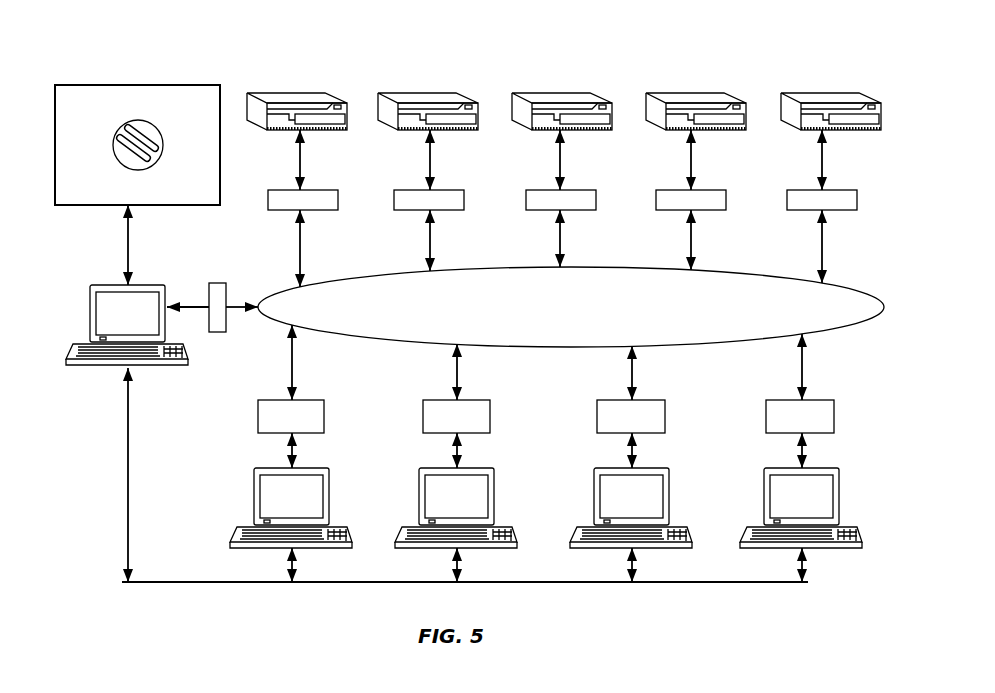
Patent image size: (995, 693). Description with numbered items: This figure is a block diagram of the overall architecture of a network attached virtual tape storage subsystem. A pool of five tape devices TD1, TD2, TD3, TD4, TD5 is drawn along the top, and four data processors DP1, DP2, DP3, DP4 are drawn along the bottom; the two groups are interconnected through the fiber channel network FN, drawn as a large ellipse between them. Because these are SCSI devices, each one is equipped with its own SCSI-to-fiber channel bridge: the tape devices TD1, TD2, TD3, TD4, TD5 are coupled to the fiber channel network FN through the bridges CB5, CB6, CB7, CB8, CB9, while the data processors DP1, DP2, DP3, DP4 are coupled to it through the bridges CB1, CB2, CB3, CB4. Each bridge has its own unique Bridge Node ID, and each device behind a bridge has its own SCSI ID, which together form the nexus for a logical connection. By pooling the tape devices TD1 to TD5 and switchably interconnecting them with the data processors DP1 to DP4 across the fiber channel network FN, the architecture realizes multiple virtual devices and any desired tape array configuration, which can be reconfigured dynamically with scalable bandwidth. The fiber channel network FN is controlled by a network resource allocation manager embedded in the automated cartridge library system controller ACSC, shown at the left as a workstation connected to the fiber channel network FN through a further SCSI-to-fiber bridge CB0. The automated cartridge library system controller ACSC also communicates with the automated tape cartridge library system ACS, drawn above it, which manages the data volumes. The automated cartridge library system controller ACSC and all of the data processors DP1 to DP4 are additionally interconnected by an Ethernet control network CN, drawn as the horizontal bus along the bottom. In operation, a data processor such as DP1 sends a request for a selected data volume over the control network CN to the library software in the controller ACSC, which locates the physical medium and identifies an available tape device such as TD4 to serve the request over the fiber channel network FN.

The automated tape cartridge library system ACS is at (158, 160).
The automated cartridge library system controller ACSC is at (87, 368).
The SCSI-to-fiber bridge CB0 is at (216, 332).
The SCSI-to-fiber channel bridge CB1 is at (324, 414).
The SCSI-to-fiber channel bridge CB2 is at (490, 414).
The SCSI-to-fiber channel bridge CB3 is at (665, 414).
The SCSI-to-fiber channel bridge CB4 is at (834, 414).
The SCSI-to-fiber channel bridge CB5 is at (322, 210).
The SCSI-to-fiber channel bridge CB6 is at (452, 210).
The SCSI-to-fiber channel bridge CB7 is at (580, 210).
The SCSI-to-fiber channel bridge CB8 is at (711, 210).
The SCSI-to-fiber channel bridge CB9 is at (842, 210).
The tape device TD1 is at (301, 92).
The tape device TD2 is at (431, 92).
The tape device TD3 is at (561, 92).
The tape device TD4 is at (692, 92).
The tape device TD5 is at (823, 92).
The data processor DP1 is at (254, 478).
The data processor DP2 is at (419, 478).
The data processor DP3 is at (594, 478).
The data processor DP4 is at (764, 478).
The fiber channel network FN is at (571, 307).
The control network CN is at (195, 582).